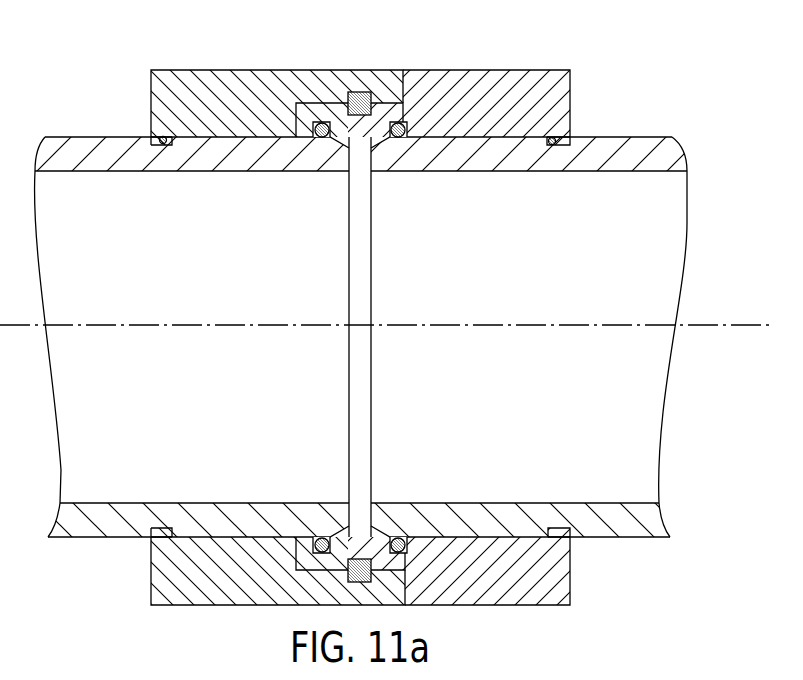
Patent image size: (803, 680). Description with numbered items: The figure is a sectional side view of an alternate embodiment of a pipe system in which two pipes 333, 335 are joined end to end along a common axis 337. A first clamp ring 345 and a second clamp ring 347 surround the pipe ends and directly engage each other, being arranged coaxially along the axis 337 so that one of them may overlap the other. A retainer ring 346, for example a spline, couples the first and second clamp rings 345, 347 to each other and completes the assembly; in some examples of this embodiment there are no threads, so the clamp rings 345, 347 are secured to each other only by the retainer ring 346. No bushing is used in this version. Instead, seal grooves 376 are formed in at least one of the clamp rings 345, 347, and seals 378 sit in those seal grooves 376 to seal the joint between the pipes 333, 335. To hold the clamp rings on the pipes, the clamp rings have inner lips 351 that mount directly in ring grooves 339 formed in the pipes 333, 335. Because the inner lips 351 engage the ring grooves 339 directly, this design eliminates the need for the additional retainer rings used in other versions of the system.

The pipe 333 is at (57, 148).
The pipe 335 is at (668, 145).
The axis 337 is at (743, 323).
The ring groove 339 is at (160, 137).
The first clamp ring 345 is at (173, 77).
The retainer ring 346 is at (358, 92).
The second clamp ring 347 is at (556, 75).
The inner lip 351 is at (163, 147).
The seal groove 376 is at (318, 122).
The seal 378 is at (320, 137).